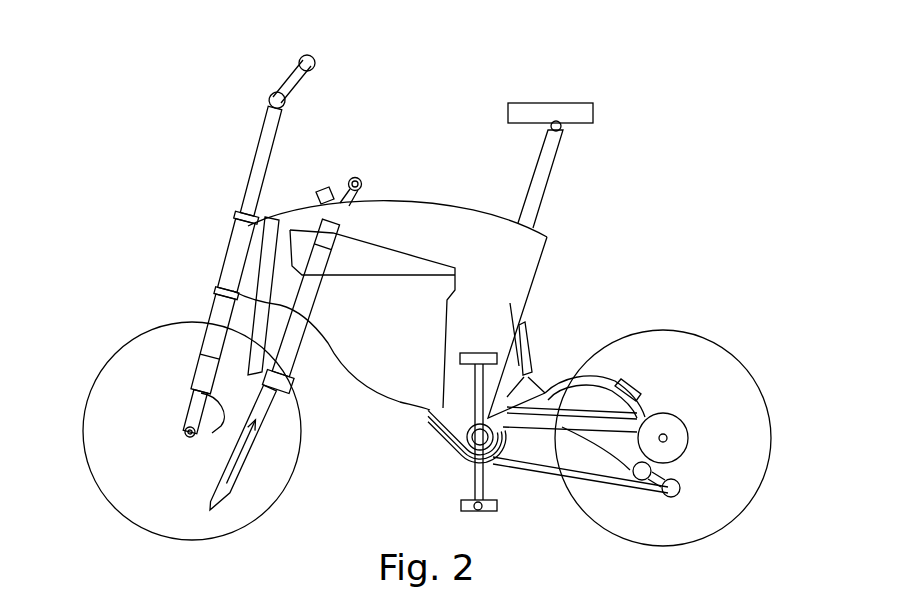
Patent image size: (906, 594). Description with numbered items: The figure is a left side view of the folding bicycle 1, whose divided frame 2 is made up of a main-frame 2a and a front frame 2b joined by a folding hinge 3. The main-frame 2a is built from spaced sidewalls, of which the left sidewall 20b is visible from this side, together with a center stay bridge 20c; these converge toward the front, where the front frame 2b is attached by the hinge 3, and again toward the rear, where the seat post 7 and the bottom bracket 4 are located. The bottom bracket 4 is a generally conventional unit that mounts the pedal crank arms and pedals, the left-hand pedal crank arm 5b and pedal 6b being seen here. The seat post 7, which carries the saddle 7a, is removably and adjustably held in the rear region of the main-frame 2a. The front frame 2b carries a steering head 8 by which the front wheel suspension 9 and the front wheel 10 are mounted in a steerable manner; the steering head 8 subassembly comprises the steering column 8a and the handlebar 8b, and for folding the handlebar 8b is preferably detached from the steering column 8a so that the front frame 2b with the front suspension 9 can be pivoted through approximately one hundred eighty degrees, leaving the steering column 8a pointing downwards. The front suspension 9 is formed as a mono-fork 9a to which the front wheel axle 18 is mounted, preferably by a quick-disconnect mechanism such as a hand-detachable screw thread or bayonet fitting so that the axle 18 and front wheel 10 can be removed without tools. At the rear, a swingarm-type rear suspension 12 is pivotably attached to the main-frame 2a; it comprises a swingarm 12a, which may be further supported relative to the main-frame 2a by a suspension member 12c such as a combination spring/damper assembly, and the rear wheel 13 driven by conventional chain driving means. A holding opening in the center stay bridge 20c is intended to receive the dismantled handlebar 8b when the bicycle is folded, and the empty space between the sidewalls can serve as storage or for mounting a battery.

The folding bicycle 1 is at (162, 146).
The divided frame 2 is at (435, 100).
The main-frame 2a is at (398, 222).
The front frame 2b is at (253, 253).
The folding hinge 3 is at (224, 299).
The bottom bracket 4 is at (475, 460).
The pedal crank arm 5b is at (462, 405).
The pedal 6b is at (463, 362).
The seat post 7 is at (545, 168).
The saddle 7a is at (561, 115).
The steering head 8 is at (200, 248).
The steering column 8a is at (265, 142).
The handlebar 8b is at (290, 73).
The front wheel suspension 9 is at (118, 263).
The mono-fork 9a is at (200, 383).
The front wheel 10 is at (110, 355).
The rear suspension 12 is at (654, 348).
The swingarm 12a is at (567, 428).
The suspension member 12c is at (530, 340).
The wheel 13 is at (720, 340).
The front wheel axle 18 is at (186, 426).
The left sidewall 20b is at (438, 223).
The center stay bridge 20c is at (333, 348).